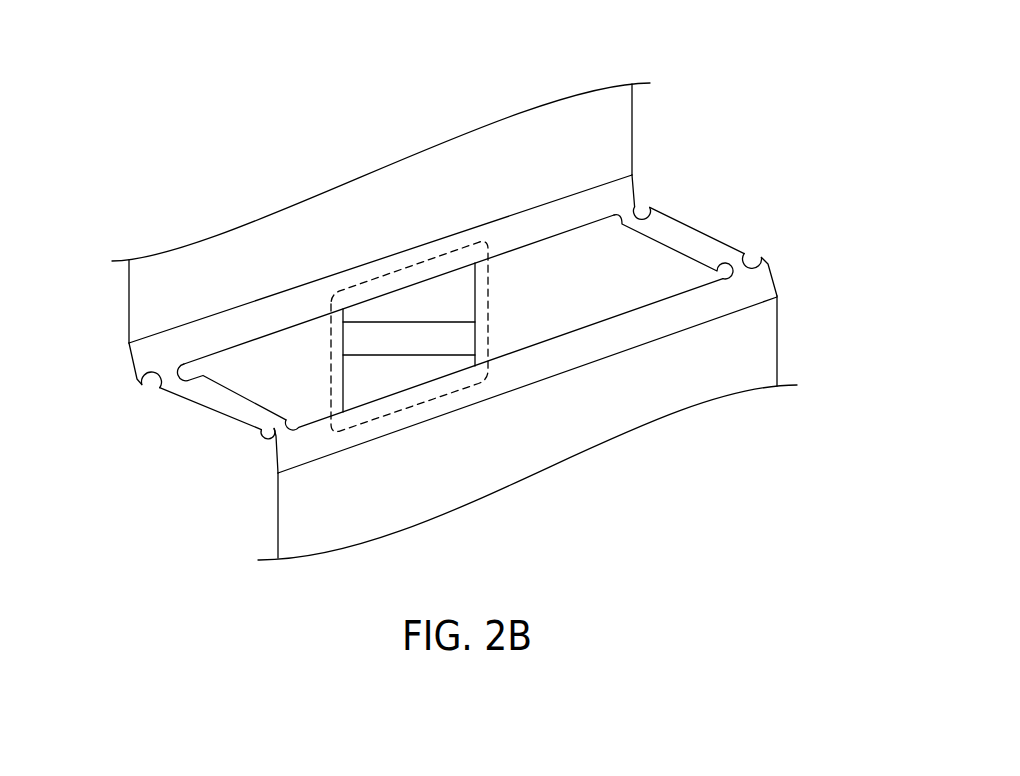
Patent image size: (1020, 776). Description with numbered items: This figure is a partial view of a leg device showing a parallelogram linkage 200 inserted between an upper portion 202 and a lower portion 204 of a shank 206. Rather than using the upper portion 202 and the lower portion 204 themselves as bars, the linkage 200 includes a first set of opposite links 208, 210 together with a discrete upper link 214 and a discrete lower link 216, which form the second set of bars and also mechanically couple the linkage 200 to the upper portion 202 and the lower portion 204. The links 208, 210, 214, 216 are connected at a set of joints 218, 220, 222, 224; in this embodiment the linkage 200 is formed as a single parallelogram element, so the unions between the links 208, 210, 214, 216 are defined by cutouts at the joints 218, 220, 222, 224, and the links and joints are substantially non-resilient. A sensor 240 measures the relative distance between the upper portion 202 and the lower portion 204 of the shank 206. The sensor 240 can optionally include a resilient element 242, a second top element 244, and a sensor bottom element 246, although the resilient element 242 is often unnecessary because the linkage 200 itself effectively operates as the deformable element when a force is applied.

The parallelogram linkage 200 is at (469, 291).
The upper portion 202 is at (639, 129).
The lower portion 204 is at (271, 515).
The shank 206 is at (510, 247).
The link 208 is at (200, 418).
The link 210 is at (711, 227).
The upper link 214 is at (406, 246).
The lower link 216 is at (463, 415).
The joint 218 is at (152, 388).
The joint 220 is at (644, 211).
The joint 222 is at (265, 430).
The joint 224 is at (754, 261).
The sensor 240 is at (379, 426).
The resilient element 242 is at (484, 333).
The second top element 244 is at (481, 283).
The sensor bottom element 246 is at (338, 378).